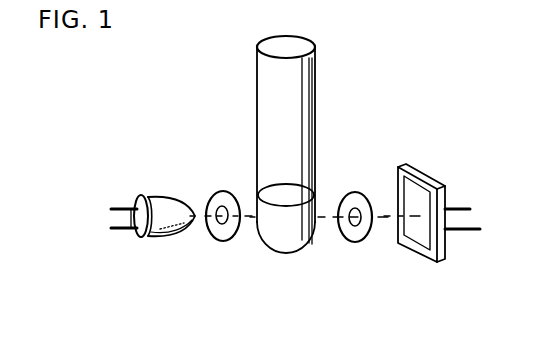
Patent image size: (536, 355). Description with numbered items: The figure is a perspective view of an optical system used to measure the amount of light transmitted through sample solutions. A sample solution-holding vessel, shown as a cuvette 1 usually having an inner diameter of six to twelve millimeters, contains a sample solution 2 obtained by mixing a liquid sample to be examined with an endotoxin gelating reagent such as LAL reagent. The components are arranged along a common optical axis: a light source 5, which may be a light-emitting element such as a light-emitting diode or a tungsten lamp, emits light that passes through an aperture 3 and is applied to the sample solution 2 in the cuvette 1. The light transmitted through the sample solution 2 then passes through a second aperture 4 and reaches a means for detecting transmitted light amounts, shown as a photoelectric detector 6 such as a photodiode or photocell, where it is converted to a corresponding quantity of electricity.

The cuvette 1 is at (313, 78).
The sample solution 2 is at (285, 237).
The aperture 3 is at (216, 219).
The aperture 4 is at (352, 192).
The light source 5 is at (165, 201).
The photoelectric detector 6 is at (415, 252).